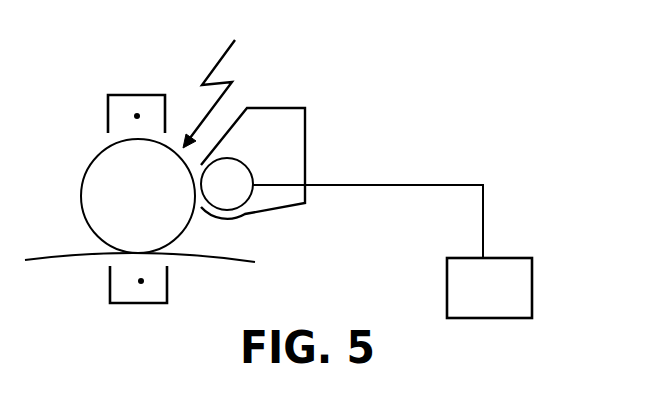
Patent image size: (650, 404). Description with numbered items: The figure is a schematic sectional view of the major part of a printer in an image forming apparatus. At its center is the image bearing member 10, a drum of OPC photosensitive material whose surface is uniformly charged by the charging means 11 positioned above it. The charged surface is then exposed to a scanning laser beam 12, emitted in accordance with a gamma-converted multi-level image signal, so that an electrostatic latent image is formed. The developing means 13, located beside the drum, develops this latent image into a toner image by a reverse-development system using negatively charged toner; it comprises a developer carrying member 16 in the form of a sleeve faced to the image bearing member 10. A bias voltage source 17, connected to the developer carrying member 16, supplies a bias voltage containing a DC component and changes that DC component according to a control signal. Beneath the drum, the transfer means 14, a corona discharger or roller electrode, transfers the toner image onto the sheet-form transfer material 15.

The image bearing member 10 is at (98, 157).
The charging means 11 is at (133, 95).
The scanning laser beam 12 is at (232, 48).
The developing means 13 is at (305, 125).
The transfer means 14 is at (167, 287).
The transfer material 15 is at (50, 262).
The developer carrying member 16 is at (240, 212).
The bias voltage source 17 is at (525, 289).